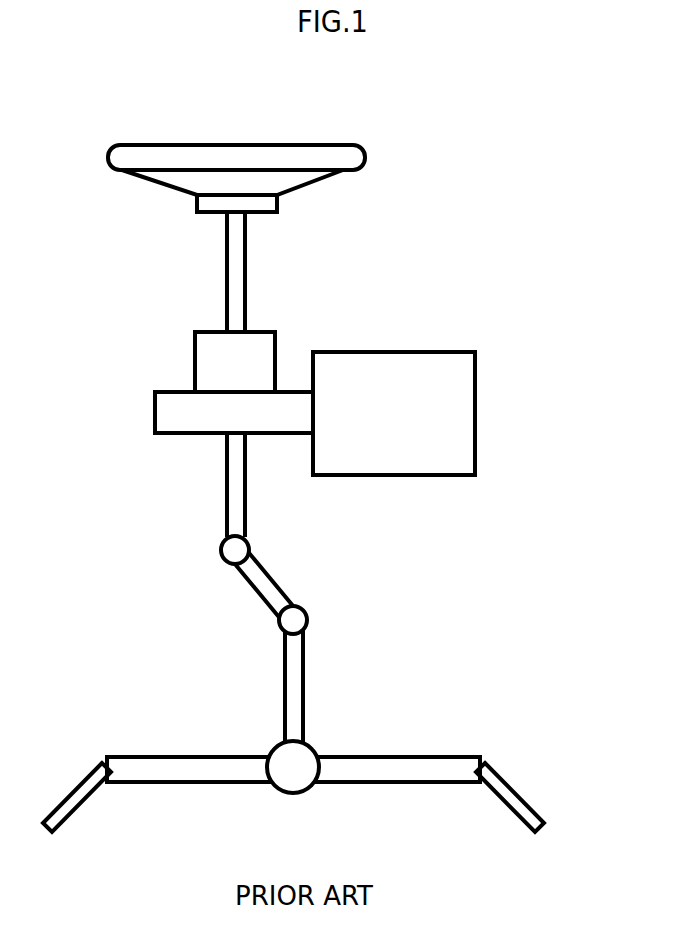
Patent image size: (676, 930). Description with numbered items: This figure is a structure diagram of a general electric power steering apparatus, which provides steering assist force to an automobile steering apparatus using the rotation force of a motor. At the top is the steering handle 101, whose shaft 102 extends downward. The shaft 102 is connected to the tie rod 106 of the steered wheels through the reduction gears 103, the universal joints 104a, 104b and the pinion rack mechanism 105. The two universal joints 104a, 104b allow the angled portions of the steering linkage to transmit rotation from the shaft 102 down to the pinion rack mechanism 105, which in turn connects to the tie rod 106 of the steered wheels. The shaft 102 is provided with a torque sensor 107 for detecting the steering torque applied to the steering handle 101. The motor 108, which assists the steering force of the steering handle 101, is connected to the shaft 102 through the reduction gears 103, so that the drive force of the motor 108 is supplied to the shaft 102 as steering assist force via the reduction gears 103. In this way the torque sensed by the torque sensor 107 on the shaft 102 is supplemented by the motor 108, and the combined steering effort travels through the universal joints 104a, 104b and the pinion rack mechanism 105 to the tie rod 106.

The steering handle 101 is at (365, 152).
The shaft 102 is at (245, 268).
The reduction gears 103 is at (155, 417).
The universal joint 104a is at (220, 552).
The universal joint 104b is at (280, 625).
The pinion rack mechanism 105 is at (313, 745).
The tie rod 106 is at (520, 790).
The torque sensor 107 is at (195, 363).
The motor 108 is at (475, 410).